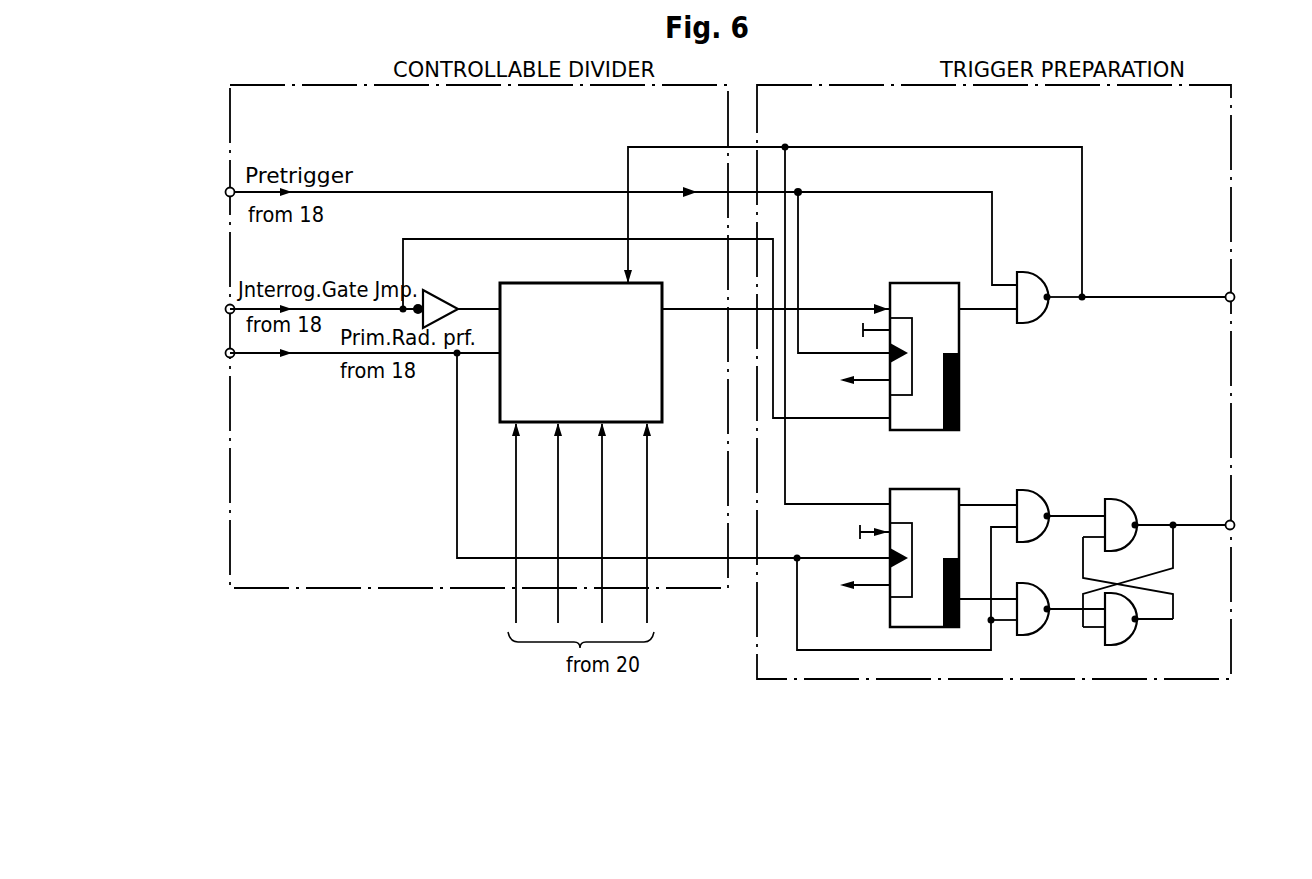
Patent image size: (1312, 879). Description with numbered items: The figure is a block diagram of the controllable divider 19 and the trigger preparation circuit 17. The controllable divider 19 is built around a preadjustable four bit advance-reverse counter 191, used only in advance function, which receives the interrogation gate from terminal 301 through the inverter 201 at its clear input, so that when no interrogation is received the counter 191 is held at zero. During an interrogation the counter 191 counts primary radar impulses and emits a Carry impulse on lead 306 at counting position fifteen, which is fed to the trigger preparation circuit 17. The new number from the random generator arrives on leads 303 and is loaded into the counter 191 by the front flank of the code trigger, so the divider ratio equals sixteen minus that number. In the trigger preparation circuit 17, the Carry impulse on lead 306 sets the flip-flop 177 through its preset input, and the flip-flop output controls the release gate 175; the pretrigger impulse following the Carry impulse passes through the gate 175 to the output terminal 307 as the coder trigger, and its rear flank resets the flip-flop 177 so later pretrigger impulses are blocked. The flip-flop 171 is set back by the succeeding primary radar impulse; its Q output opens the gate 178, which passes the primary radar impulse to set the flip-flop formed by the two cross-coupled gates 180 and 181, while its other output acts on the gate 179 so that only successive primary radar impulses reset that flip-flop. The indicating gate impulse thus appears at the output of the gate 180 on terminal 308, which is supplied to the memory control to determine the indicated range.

The controllable divider 19 is at (244, 91).
The trigger preparation circuit 17 is at (812, 95).
The terminal 301 is at (226, 308).
The inverter 201 is at (440, 303).
The four bit advance-reverse counter 191 is at (662, 402).
The lead 306 is at (707, 311).
The leads 303 is at (540, 537).
The flip-flop 177 is at (928, 290).
The release gate 175 is at (1042, 285).
The output terminal 307 is at (1236, 295).
The flip-flop 171 is at (928, 497).
The gate 178 is at (1044, 498).
The gate 179 is at (1044, 592).
The gate 180 is at (1124, 505).
The gate 181 is at (1120, 632).
The terminal 308 is at (1236, 521).